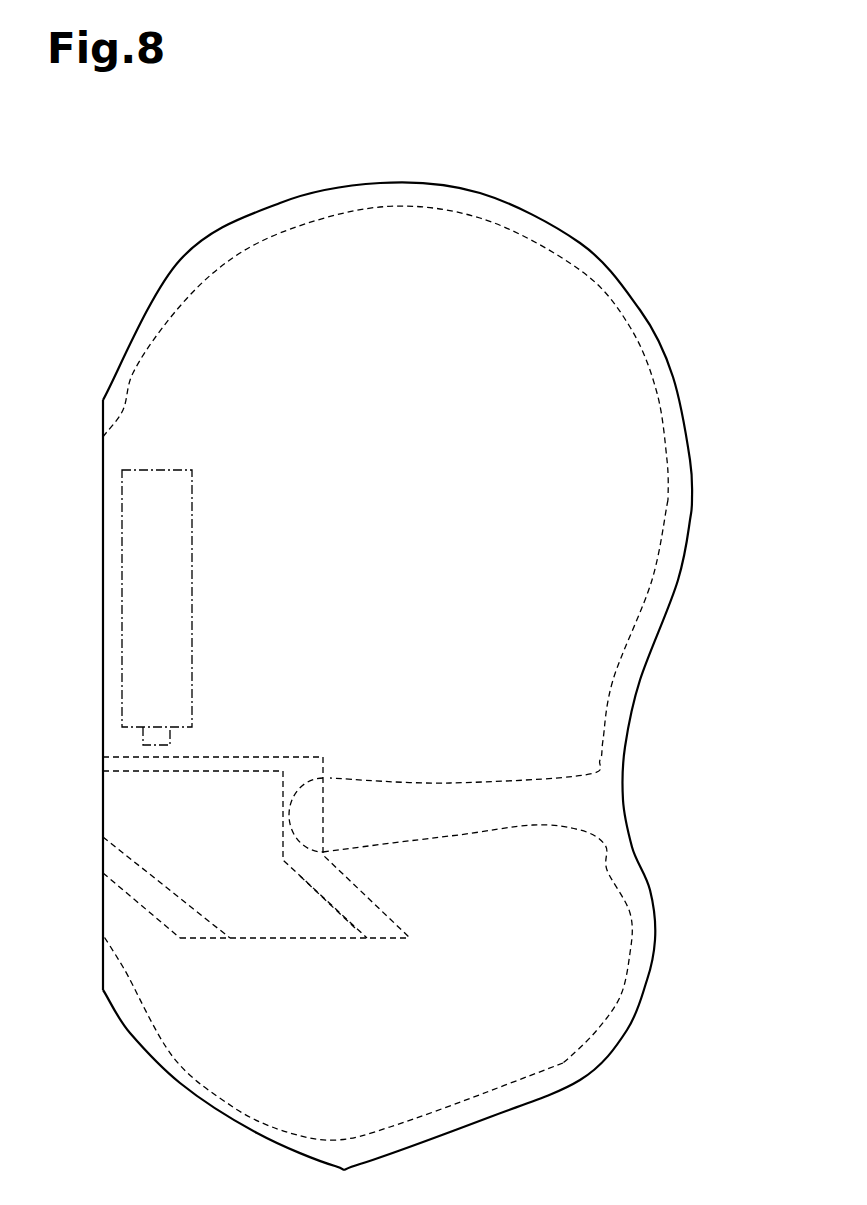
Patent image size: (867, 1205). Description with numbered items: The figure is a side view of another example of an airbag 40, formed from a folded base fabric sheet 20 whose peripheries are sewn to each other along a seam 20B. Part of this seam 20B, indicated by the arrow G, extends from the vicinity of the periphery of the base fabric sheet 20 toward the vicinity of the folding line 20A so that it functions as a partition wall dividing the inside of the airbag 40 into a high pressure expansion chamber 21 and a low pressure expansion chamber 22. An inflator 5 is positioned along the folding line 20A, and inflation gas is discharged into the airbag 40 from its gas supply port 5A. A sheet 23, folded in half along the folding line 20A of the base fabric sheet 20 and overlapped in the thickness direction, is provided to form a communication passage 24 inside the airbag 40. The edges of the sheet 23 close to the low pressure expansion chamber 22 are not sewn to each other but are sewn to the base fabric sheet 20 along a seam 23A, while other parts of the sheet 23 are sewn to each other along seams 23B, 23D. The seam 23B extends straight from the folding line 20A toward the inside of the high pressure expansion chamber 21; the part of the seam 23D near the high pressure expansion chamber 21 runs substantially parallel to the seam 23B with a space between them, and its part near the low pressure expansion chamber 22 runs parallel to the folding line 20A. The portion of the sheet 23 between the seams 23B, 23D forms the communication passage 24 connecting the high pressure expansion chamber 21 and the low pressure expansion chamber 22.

The airbag 40 is at (422, 676).
The base fabric sheet 20 is at (692, 520).
The folding line 20A is at (103, 645).
The seam 20B is at (483, 220).
The high pressure expansion chamber 21 is at (592, 1026).
The low pressure expansion chamber 22 is at (602, 672).
The sheet 23 is at (327, 740).
The seam 23A is at (263, 772).
The seam 23B is at (188, 905).
The seam 23D is at (350, 920).
The communication passage 24 is at (277, 923).
The inflator 5 is at (153, 470).
The gas supply port 5A is at (172, 750).
The arrow G is at (430, 752).